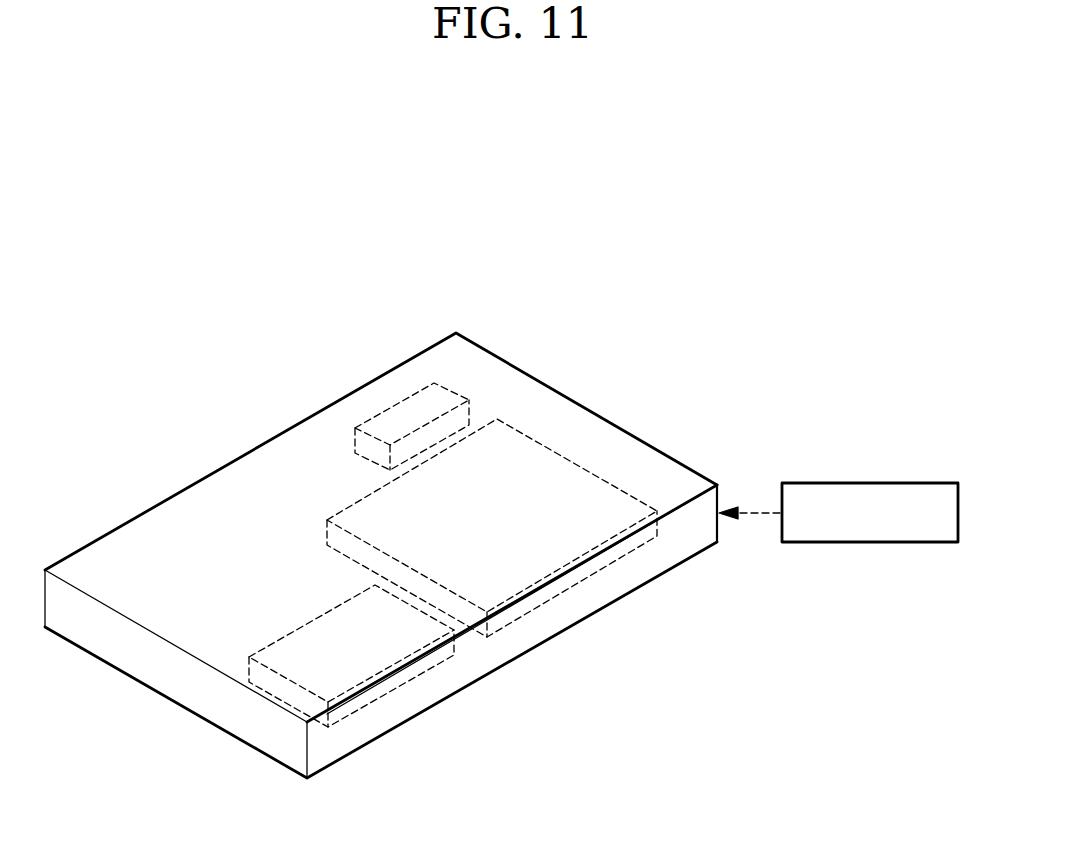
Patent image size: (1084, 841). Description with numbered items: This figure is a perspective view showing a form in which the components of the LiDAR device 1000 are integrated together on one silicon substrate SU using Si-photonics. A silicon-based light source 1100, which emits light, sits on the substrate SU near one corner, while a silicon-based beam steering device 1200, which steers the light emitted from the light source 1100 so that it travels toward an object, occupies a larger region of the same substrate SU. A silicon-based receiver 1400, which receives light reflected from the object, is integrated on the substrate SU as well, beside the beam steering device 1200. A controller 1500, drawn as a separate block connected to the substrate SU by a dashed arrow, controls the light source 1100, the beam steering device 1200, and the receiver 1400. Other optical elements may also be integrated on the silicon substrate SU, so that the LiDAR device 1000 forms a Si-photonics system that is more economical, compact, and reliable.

The LiDAR device 1000 is at (827, 318).
The silicon substrate SU is at (352, 742).
The light source 1100 is at (402, 410).
The beam steering device 1200 is at (572, 578).
The receiver 1400 is at (398, 678).
The controller 1500 is at (872, 483).